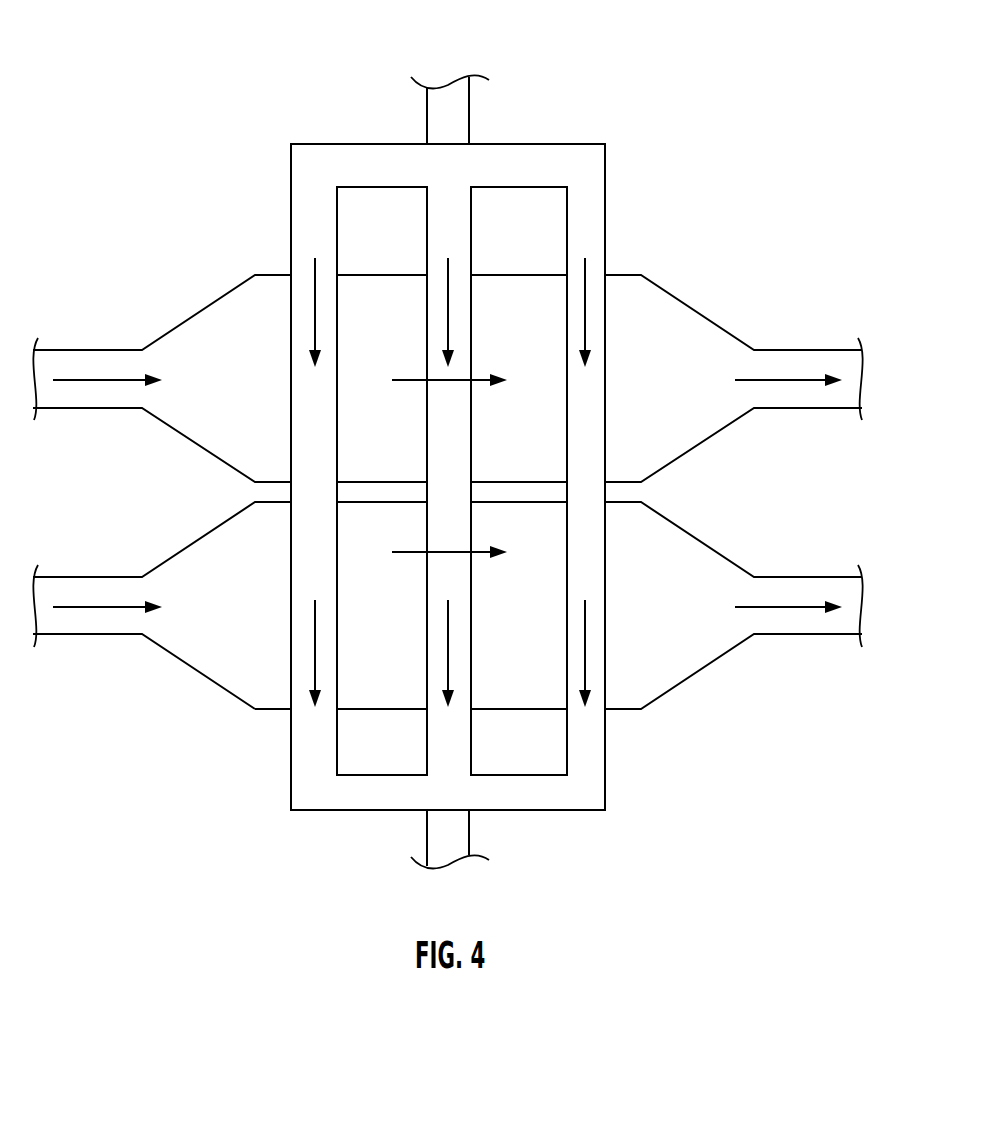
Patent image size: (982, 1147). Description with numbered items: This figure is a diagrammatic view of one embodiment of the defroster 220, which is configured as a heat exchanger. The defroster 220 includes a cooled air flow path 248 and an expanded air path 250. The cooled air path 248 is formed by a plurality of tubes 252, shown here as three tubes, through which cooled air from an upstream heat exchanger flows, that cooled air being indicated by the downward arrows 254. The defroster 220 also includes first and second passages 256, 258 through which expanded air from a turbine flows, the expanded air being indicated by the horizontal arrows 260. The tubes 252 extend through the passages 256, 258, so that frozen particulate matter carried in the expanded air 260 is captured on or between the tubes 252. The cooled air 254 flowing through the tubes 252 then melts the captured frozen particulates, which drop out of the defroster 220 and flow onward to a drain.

The defroster 220 is at (90, 140).
The cooled air flow path 248 is at (594, 112).
The expanded air path 250 is at (160, 703).
The tubes 252 is at (289, 205).
The cooled air 254 is at (315, 300).
The first passage 256 is at (198, 312).
The second passage 258 is at (268, 711).
The expanded air 260 is at (103, 378).